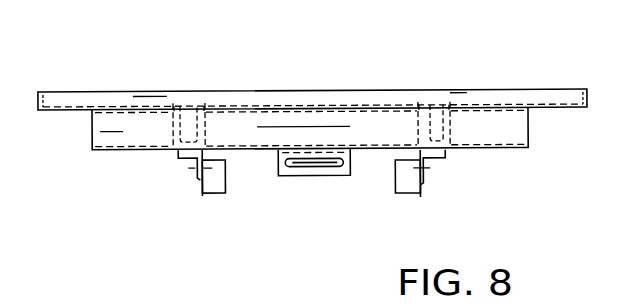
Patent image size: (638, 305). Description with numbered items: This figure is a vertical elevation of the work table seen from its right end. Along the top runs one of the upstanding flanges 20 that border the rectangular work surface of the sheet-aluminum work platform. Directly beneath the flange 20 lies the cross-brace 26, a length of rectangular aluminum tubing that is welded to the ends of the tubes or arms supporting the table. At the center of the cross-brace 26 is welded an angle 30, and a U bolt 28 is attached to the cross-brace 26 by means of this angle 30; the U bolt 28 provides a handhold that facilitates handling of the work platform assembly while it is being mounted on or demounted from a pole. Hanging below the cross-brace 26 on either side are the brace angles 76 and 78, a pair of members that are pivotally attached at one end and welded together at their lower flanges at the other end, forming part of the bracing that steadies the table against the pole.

The upstanding flanges 20 is at (553, 90).
The cross-brace 26 is at (520, 125).
The U bolt 28 is at (322, 165).
The angle 30 is at (297, 177).
The brace angle 76 is at (213, 190).
The brace angle 78 is at (407, 184).